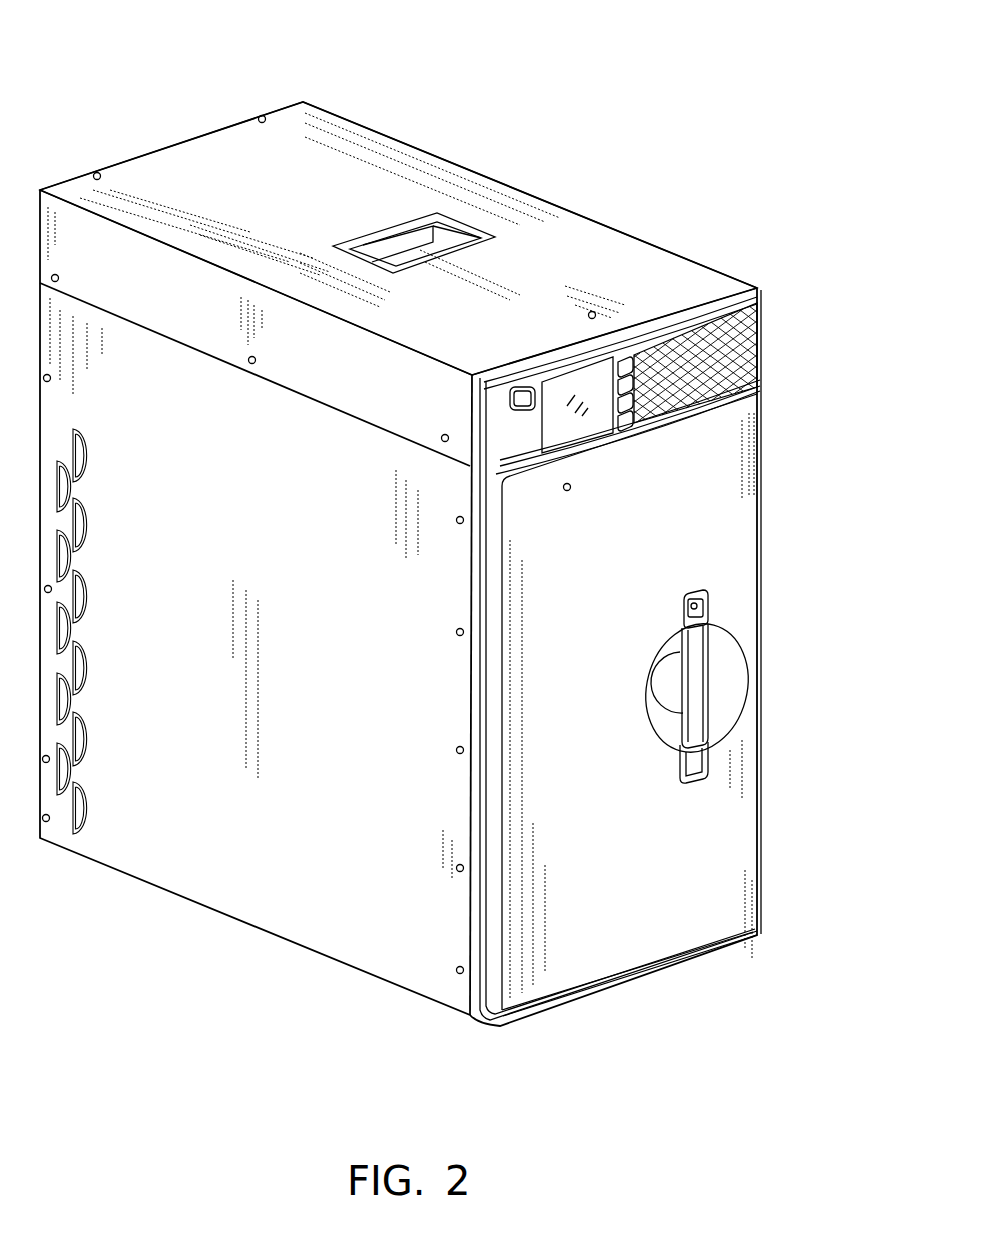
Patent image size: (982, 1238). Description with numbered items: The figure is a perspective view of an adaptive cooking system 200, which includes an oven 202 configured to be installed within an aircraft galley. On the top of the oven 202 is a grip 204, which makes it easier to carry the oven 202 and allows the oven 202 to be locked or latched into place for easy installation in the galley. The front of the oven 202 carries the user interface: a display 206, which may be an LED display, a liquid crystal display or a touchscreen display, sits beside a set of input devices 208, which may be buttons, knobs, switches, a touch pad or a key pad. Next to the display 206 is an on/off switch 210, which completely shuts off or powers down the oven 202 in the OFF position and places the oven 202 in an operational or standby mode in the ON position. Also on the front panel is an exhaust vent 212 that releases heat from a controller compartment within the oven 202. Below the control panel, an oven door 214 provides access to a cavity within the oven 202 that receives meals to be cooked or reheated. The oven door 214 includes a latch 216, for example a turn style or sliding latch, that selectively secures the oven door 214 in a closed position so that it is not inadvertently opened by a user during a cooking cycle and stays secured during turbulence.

The adaptive cooking system 200 is at (650, 193).
The oven 202 is at (422, 193).
The grip 204 is at (383, 247).
The display 206 is at (594, 380).
The input devices 208 is at (631, 357).
The on/off switch 210 is at (521, 392).
The exhaust vent 212 is at (760, 356).
The oven door 214 is at (730, 494).
The latch 216 is at (710, 672).